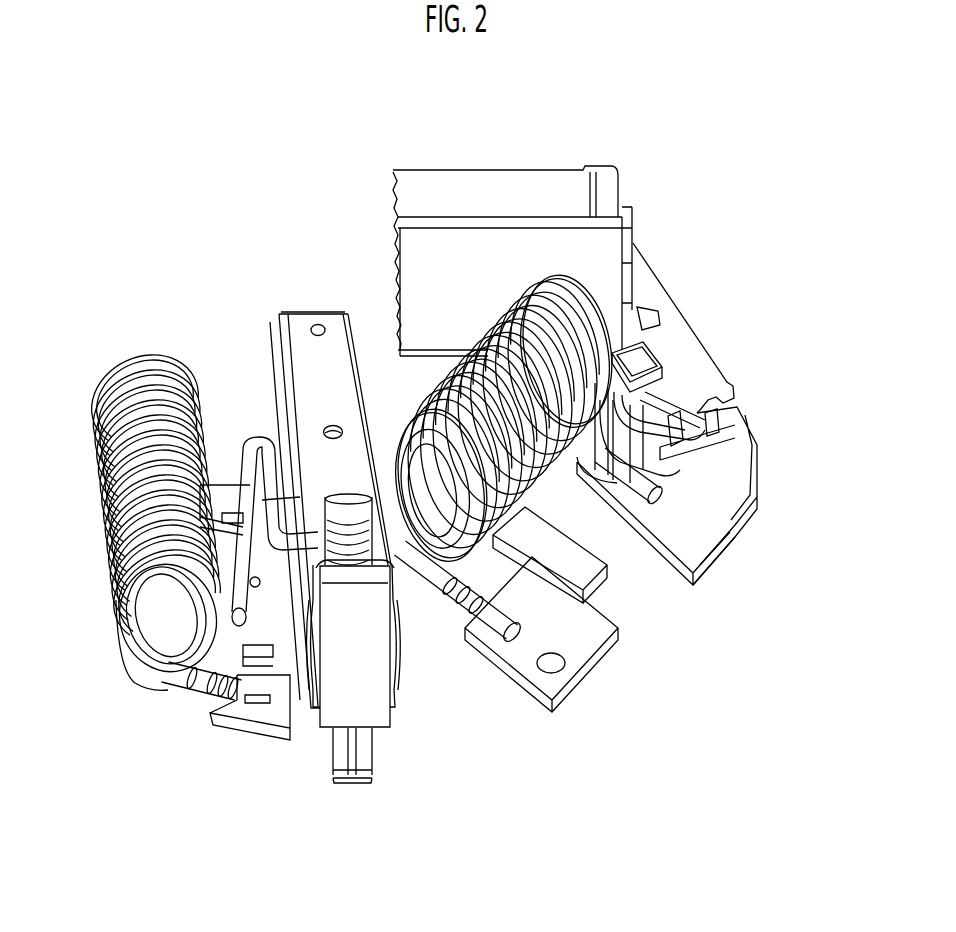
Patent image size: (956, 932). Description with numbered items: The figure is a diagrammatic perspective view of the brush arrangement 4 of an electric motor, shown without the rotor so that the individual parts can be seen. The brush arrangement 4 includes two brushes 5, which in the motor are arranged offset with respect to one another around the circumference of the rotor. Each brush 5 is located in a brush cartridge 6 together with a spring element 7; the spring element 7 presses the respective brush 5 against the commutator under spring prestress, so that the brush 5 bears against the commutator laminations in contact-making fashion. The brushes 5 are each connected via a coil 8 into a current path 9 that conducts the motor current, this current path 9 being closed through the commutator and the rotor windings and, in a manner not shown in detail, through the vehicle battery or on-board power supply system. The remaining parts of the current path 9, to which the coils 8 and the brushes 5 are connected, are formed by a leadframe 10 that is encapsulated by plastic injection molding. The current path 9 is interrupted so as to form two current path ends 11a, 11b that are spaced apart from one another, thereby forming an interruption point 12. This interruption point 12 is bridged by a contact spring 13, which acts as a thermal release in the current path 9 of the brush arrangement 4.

The brush arrangement 4 is at (538, 168).
The brush 5 is at (315, 312).
The brush cartridge 6 is at (400, 636).
The spring element 7 is at (324, 570).
The coil 8 is at (490, 350).
The current path 9 is at (577, 653).
The leadframe 10 is at (590, 573).
The current path end 11a is at (722, 381).
The current path end 11b is at (740, 435).
The interruption point 12 is at (680, 400).
The contact spring 13 is at (663, 413).